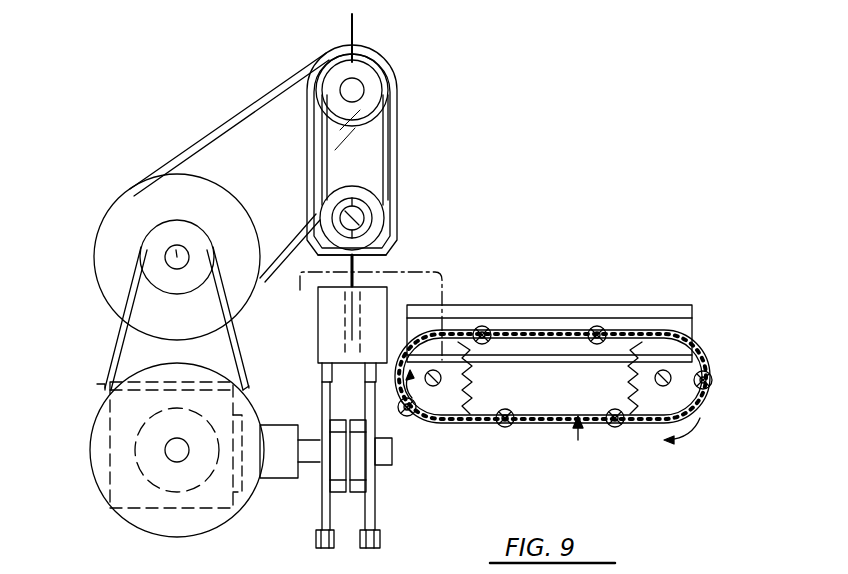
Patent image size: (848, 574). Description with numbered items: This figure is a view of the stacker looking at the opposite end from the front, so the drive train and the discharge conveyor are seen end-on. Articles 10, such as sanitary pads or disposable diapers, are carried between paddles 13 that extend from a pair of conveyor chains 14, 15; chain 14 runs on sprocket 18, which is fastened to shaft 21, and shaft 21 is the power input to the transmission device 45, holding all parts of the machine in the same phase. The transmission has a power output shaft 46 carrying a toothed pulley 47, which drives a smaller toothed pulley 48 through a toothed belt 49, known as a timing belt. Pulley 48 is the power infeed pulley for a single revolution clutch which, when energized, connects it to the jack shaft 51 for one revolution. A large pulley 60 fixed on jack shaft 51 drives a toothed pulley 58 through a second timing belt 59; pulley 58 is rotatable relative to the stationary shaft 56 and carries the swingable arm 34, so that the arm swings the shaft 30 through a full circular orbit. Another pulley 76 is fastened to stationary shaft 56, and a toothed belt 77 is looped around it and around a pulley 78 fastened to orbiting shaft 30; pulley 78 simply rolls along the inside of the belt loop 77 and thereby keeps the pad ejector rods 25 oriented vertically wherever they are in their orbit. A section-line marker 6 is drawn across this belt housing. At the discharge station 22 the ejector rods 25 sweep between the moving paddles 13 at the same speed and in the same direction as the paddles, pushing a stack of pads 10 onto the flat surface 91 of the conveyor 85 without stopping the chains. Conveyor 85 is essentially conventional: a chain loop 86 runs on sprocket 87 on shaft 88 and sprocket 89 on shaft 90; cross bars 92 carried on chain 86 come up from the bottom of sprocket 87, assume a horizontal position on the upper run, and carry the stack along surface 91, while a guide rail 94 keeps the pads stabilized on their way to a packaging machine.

The section line 6- 6 is at (350, 27).
The articles 10 is at (420, 272).
The paddles 13 is at (318, 338).
The conveyor chain 14 is at (316, 541).
The chain 15 is at (380, 545).
The sprocket 18 is at (378, 517).
The shaft 21 is at (392, 462).
The discharge station 22 is at (736, 318).
The pad ejector rods 25 is at (330, 306).
The shaft 30 is at (362, 218).
The swingable arm 34 is at (393, 244).
The transmission device 45 is at (142, 512).
The power output shaft 46 is at (165, 450).
The toothed pulley 47 is at (98, 478).
The smaller toothed pulley 48 is at (165, 257).
The toothed belt 49 is at (124, 326).
The jack shaft 51 is at (176, 250).
The stationary shaft 56 is at (364, 90).
The toothed pulley 58 is at (375, 48).
The toothed belt 59 is at (247, 109).
The large pulley 60 is at (98, 211).
The pulley 76 is at (378, 74).
The toothed belt 77 is at (392, 152).
The pulley 78 is at (382, 184).
The conveyor 85 is at (578, 440).
The chain loop 86 is at (534, 427).
The sprocket 87 is at (440, 412).
The shaft 88 is at (444, 382).
The sprocket 89 is at (632, 426).
The shaft 90 is at (668, 382).
The flat surface 91 is at (532, 364).
The cross bars 92 is at (600, 334).
The guide rail 94 is at (685, 305).